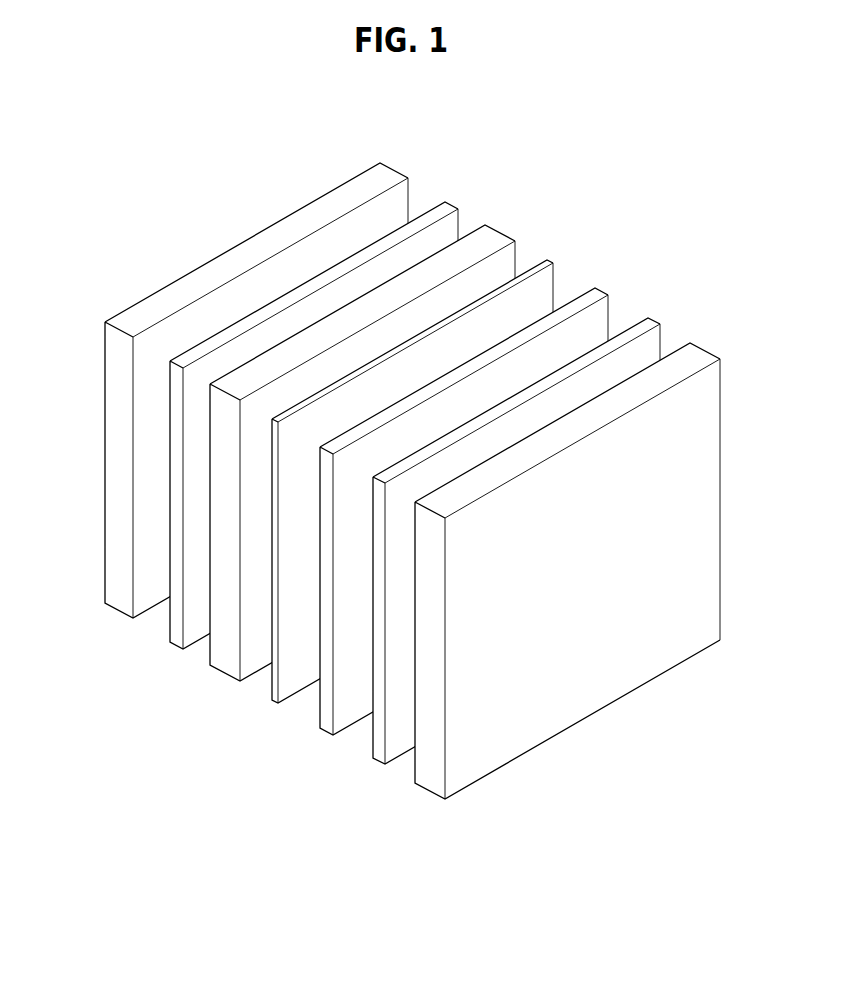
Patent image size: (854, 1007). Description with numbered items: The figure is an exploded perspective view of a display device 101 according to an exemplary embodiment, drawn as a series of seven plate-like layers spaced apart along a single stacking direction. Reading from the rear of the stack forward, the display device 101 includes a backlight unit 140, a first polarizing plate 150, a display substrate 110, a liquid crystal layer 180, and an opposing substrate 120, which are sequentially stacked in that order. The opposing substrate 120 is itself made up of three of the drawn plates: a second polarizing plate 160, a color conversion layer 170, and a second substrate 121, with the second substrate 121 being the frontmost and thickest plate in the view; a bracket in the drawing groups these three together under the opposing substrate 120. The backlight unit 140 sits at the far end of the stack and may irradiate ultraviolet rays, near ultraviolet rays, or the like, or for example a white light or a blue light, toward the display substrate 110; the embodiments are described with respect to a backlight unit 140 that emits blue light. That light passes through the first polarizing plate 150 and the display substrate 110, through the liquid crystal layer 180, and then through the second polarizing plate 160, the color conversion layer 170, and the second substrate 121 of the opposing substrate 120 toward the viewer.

The display device 101 is at (212, 215).
The display substrate 110 is at (225, 666).
The opposing substrate 120 is at (371, 855).
The second substrate 121 is at (432, 786).
The backlight unit 140 is at (123, 598).
The first polarizing plate 150 is at (178, 640).
The second polarizing plate 160 is at (325, 726).
The color conversion layer 170 is at (380, 756).
The liquid crystal layer 180 is at (278, 698).